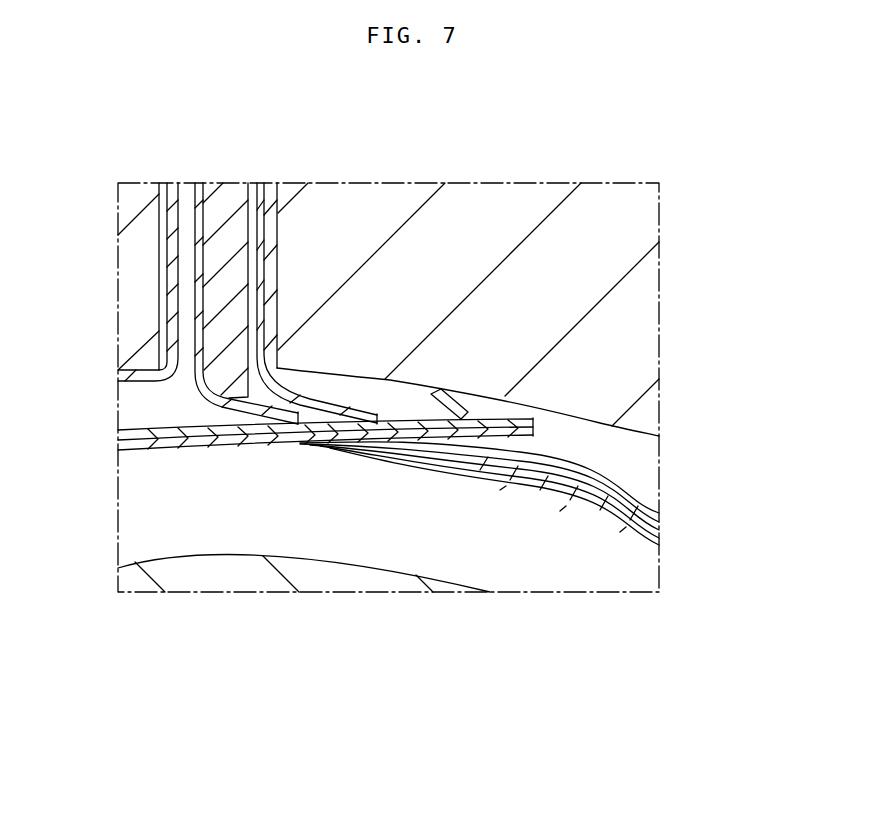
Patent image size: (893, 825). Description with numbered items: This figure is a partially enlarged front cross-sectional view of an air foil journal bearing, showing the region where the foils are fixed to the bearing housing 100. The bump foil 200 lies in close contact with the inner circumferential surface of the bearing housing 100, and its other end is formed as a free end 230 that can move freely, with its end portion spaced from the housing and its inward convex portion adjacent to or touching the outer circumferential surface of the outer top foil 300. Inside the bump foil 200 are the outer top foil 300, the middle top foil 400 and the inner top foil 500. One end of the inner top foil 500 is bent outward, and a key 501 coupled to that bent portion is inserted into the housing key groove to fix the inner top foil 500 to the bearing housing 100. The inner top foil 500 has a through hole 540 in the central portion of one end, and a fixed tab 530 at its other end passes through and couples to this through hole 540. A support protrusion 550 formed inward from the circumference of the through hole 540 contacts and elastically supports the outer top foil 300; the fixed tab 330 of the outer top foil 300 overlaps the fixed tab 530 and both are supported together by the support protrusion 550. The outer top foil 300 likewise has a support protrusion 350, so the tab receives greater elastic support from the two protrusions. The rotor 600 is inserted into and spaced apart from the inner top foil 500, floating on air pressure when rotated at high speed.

The bearing housing 100 is at (143, 278).
The bump foil 200 is at (172, 183).
The free end 230 is at (455, 390).
The outer top foil 300 is at (273, 183).
The fixed tab 330 is at (530, 401).
The support protrusion 350 is at (366, 414).
The middle top foil 400 is at (262, 183).
The inner top foil 500 is at (199, 183).
The key 501 is at (223, 183).
The fixed tab 530 is at (527, 403).
The through hole 540 is at (434, 488).
The support protrusion 550 is at (293, 424).
The rotor 600 is at (243, 566).